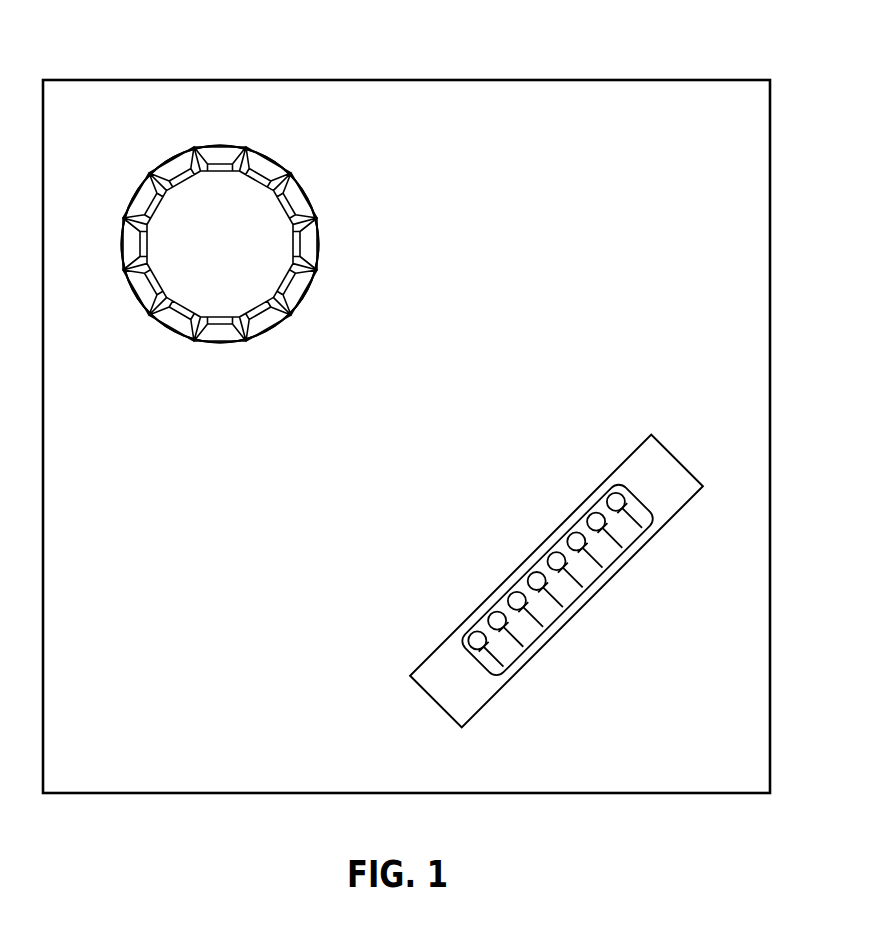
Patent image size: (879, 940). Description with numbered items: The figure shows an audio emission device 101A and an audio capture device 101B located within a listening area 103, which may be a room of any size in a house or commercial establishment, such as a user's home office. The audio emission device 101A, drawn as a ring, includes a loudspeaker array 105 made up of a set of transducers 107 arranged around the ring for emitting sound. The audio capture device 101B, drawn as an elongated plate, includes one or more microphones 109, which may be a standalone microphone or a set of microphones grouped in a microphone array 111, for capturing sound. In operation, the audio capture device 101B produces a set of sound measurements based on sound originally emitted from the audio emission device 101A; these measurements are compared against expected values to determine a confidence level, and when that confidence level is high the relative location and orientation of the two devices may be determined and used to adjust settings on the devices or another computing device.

The listening area 103 is at (73, 80).
The audio emission device 101A is at (243, 254).
The loudspeaker array 105 is at (123, 228).
The transducers 107 is at (180, 165).
The audio capture device 101B is at (422, 695).
The microphones 109 is at (572, 603).
The microphone array 111 is at (458, 653).